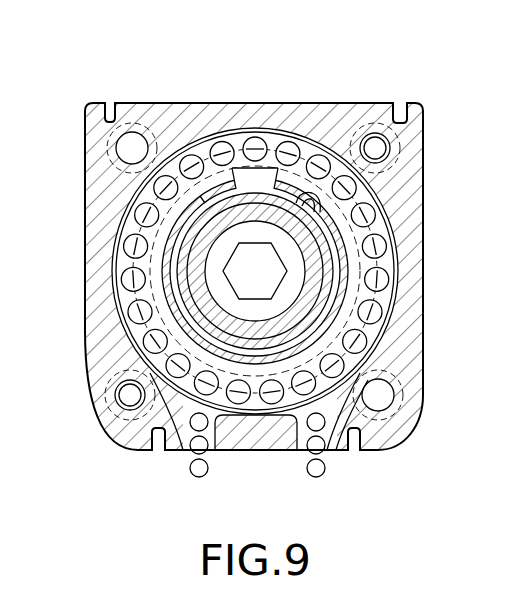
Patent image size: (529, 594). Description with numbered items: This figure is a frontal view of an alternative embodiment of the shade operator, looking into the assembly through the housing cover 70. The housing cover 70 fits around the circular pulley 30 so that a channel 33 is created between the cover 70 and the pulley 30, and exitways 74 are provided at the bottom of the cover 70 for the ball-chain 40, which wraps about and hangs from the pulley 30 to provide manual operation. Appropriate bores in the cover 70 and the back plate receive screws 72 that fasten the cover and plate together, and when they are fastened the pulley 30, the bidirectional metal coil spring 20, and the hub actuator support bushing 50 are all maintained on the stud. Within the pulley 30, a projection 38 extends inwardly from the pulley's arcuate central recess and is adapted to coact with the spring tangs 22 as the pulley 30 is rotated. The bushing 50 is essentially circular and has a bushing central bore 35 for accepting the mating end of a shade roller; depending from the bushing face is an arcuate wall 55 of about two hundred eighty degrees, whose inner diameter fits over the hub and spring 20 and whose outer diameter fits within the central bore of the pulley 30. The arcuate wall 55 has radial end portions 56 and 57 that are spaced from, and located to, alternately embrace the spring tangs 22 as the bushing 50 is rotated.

The bidirectional metal coil spring 20 is at (317, 313).
The spring tangs 22 is at (200, 200).
The circular pulley 30 is at (157, 292).
The channel 33 is at (130, 252).
The bushing central bore 35 is at (290, 280).
The projection 38 is at (264, 178).
The ball-chain 40 is at (192, 468).
The hub actuator support bushing 50 is at (297, 260).
The arcuate wall 55 is at (117, 310).
The radial end portion 56 is at (203, 200).
The radial end portion 57 is at (318, 212).
The housing cover 70 is at (97, 363).
The screws 72 is at (110, 147).
The exitways 74 is at (205, 455).